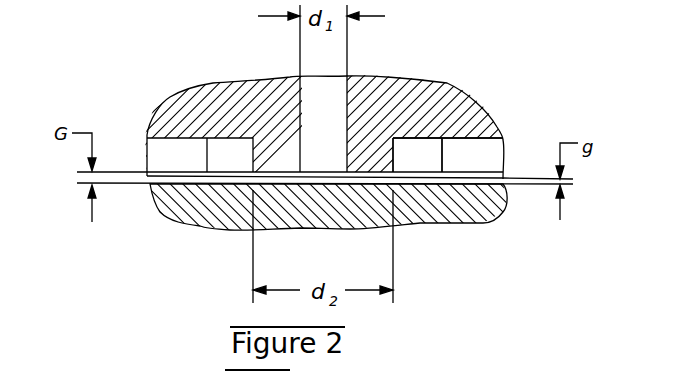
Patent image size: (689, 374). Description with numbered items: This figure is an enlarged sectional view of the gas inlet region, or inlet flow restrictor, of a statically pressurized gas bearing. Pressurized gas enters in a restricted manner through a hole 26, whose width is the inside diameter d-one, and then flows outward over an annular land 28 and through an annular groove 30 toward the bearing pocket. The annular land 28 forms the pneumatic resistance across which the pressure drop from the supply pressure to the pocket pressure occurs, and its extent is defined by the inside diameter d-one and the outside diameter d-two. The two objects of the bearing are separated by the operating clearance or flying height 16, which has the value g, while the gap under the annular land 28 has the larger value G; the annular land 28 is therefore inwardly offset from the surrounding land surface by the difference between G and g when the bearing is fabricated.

The operating clearance or flying height 16 is at (573, 182).
The hole 26 is at (340, 119).
The annular land 28 is at (377, 182).
The annular groove 30 is at (422, 142).